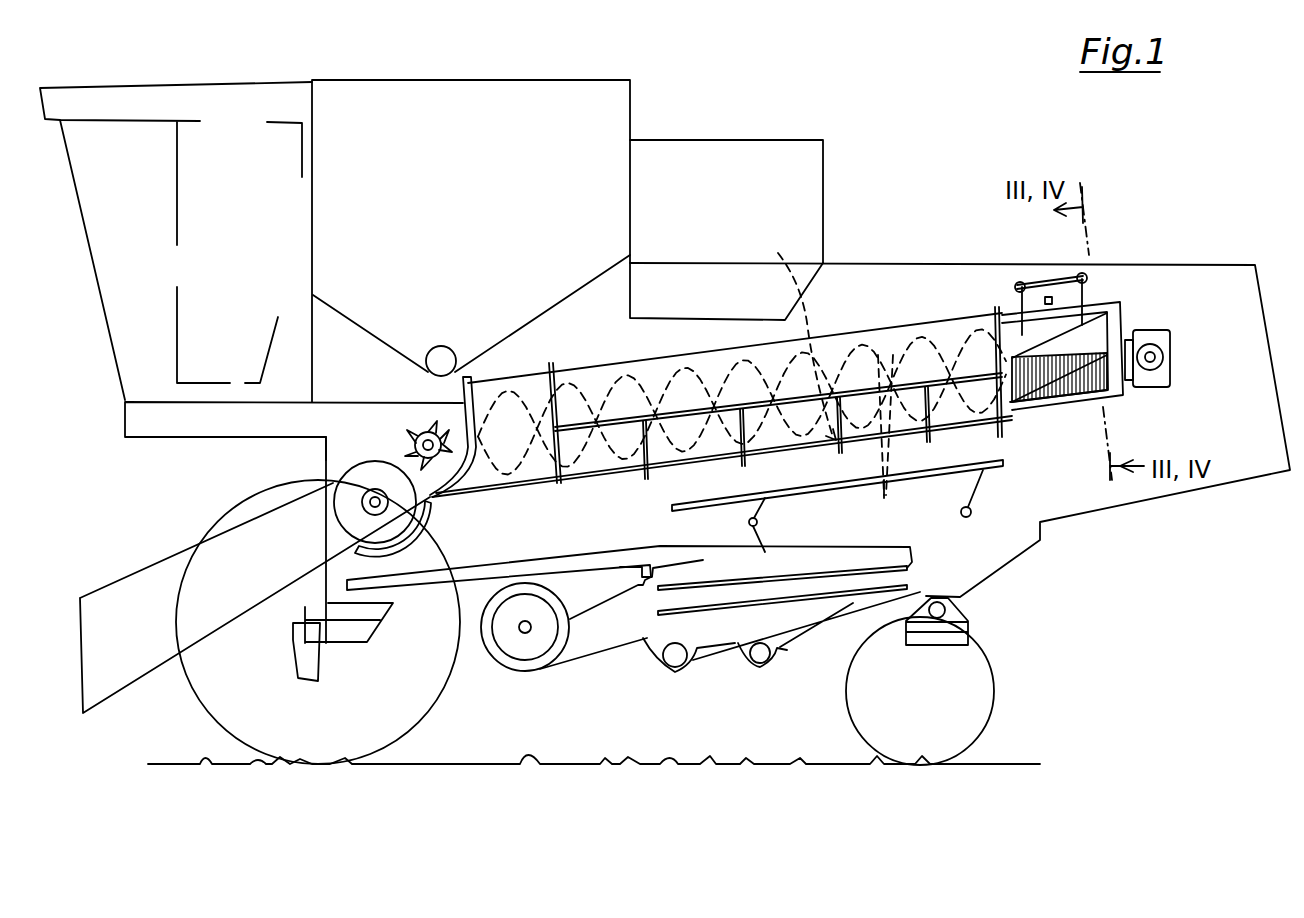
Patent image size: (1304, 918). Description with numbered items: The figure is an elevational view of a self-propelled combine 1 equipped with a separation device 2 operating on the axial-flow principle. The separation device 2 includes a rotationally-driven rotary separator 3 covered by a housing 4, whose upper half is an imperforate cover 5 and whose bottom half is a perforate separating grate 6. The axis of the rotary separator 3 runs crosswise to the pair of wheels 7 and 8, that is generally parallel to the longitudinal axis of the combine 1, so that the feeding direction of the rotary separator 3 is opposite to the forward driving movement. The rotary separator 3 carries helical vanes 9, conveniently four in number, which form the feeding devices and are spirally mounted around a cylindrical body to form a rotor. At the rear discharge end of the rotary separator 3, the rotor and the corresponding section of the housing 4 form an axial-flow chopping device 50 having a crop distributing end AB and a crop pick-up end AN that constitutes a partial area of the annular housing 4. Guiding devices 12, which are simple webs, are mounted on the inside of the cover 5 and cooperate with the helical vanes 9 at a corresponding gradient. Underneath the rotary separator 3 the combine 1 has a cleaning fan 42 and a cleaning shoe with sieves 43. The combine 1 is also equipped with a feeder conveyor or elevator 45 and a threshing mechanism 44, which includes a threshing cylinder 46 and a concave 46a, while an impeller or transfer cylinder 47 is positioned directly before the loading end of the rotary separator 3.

The combine 1 is at (676, 132).
The separation device 2 is at (702, 347).
The rotary separator 3 is at (825, 365).
The housing 4 is at (853, 347).
The cover 5 is at (908, 337).
The separating grate 6 is at (612, 467).
The wheel 7 is at (400, 737).
The wheel 8 is at (963, 746).
The helical vanes 9 is at (885, 441).
The guiding devices 12 is at (795, 334).
The cleaning fan 42 is at (518, 658).
The sieves 43 is at (741, 612).
The threshing mechanism 44 is at (365, 456).
The feeder conveyor 45 is at (155, 580).
The threshing cylinder 46 is at (368, 474).
The concave 46a is at (423, 514).
The transfer cylinder 47 is at (425, 422).
The axial-flow chopping device 50 is at (1100, 299).
The crop distributing end AB is at (1118, 401).
The crop pick-up end AN is at (1013, 408).